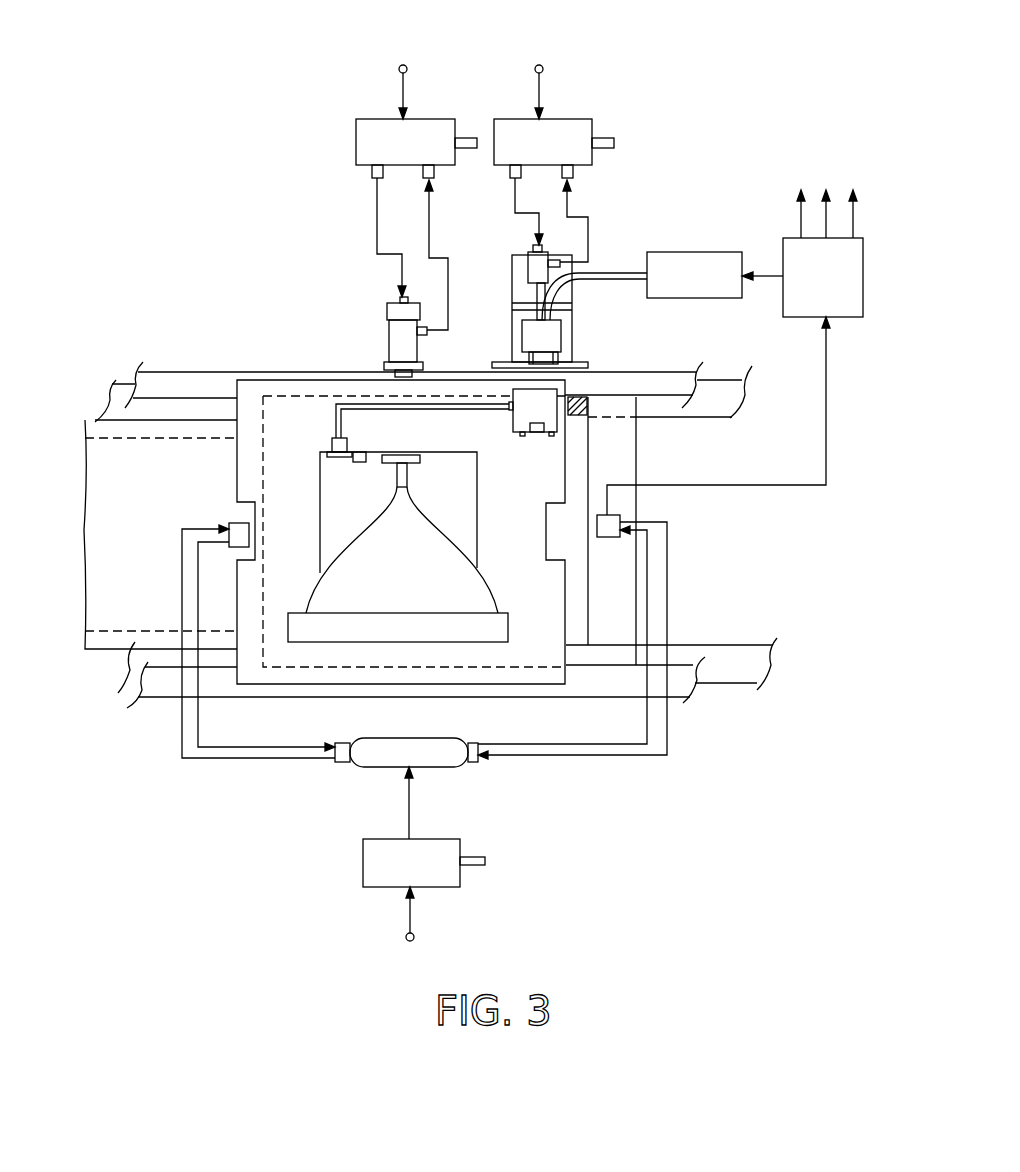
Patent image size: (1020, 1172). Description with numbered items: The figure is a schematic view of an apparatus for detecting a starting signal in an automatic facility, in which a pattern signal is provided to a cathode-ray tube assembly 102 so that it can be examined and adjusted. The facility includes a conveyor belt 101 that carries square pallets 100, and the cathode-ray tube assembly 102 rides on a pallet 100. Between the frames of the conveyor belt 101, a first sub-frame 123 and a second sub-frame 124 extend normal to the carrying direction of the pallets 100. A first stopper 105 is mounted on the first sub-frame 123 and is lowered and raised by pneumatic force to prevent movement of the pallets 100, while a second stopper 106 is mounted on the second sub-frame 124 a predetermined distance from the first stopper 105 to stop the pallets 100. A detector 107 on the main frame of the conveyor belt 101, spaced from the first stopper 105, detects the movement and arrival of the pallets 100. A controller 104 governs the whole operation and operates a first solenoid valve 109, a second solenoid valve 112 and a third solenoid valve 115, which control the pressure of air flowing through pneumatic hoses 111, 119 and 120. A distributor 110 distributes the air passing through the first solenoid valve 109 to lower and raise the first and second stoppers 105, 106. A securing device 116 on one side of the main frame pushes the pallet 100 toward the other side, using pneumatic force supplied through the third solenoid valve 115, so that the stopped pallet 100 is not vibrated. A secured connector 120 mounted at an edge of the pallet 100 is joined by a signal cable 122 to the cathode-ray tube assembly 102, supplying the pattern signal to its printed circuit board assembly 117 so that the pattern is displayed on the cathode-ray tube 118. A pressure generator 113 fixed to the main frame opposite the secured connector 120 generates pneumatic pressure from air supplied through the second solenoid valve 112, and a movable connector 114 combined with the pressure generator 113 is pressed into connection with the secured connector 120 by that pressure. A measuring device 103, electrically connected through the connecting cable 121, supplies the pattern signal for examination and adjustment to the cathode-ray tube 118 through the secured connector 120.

The pallet 100 is at (243, 500).
The conveyor belt 101 is at (192, 383).
The cathode-ray tube assembly 102 is at (414, 540).
The measuring device 103 is at (680, 257).
The controller 104 is at (840, 263).
The first stopper 105 is at (607, 522).
The second stopper 106 is at (222, 527).
The detector 107 is at (581, 400).
The first solenoid valve 109 is at (380, 873).
The distributor 110 is at (375, 760).
The pneumatic hose 111 is at (472, 860).
The second solenoid valve 112 is at (570, 128).
The pressure generator 113 is at (533, 270).
The movable connector 114 is at (556, 332).
The third solenoid valve 115 is at (430, 128).
The securing device 116 is at (400, 330).
The printed circuit board assembly 117 is at (374, 505).
The cathode-ray tube 118 is at (390, 548).
The pneumatic hose 119 is at (607, 140).
The secured connector 120 is at (527, 418).
The connecting cable 121 is at (612, 272).
The signal cable 122 is at (414, 531).
The first sub-frame 123 is at (608, 472).
The second sub-frame 124 is at (243, 475).